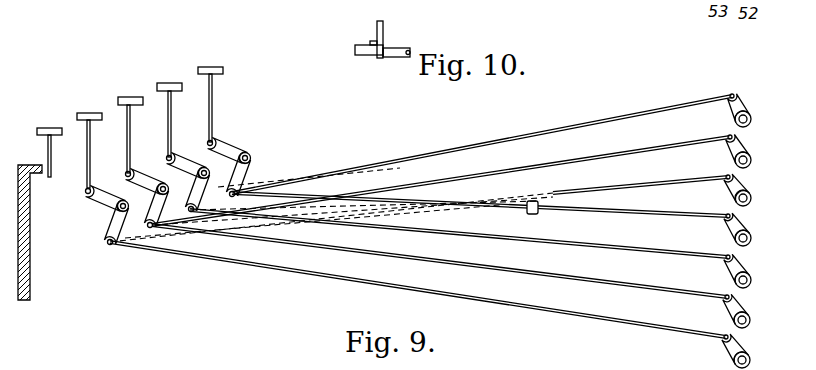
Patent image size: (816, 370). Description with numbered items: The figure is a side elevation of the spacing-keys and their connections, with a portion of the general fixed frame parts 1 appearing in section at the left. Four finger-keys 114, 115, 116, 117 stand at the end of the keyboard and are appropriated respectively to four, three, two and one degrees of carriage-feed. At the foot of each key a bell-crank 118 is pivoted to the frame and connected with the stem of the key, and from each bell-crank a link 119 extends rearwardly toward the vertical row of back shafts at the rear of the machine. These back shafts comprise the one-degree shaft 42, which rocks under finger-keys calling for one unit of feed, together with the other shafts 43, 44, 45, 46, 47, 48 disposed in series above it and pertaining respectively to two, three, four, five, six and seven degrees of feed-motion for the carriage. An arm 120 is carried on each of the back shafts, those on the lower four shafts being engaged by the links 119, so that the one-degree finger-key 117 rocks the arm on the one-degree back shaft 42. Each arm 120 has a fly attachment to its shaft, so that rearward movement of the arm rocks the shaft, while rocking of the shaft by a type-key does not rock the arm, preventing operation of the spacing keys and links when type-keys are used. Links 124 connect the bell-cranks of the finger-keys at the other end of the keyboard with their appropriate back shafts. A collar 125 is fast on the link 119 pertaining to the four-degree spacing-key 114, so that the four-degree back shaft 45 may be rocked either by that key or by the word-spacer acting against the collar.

In FIG. 9, the general fixed frame parts 1 is at (28, 278).
In FIG. 9, the one-degree shaft 42 is at (751, 360).
In FIG. 10, the one-degree shaft 42 is at (399, 58).
In FIG. 9, the two-degree back shaft 43 is at (751, 320).
In FIG. 9, the three-degree back shaft 44 is at (752, 280).
In FIG. 9, the four-degree back shaft 45 is at (752, 238).
In FIG. 9, the five-degree back shaft 46 is at (750, 195).
In FIG. 9, the six-degree back shaft 47 is at (751, 158).
In FIG. 9, the seven-degree back shaft 48 is at (751, 118).
In FIG. 9, the finger-key 114 is at (218, 63).
In FIG. 9, the finger-key 115 is at (170, 82).
In FIG. 9, the finger-key 116 is at (130, 94).
In FIG. 9, the finger-key 117 is at (92, 107).
In FIG. 9, the bell-crank 118 is at (252, 160).
In FIG. 9, the links 119 is at (459, 240).
In FIG. 9, the arm 120 is at (745, 224).
In FIG. 10, the arm 120 is at (383, 33).
In FIG. 9, the links 124 is at (580, 133).
In FIG. 9, the collar 125 is at (534, 202).